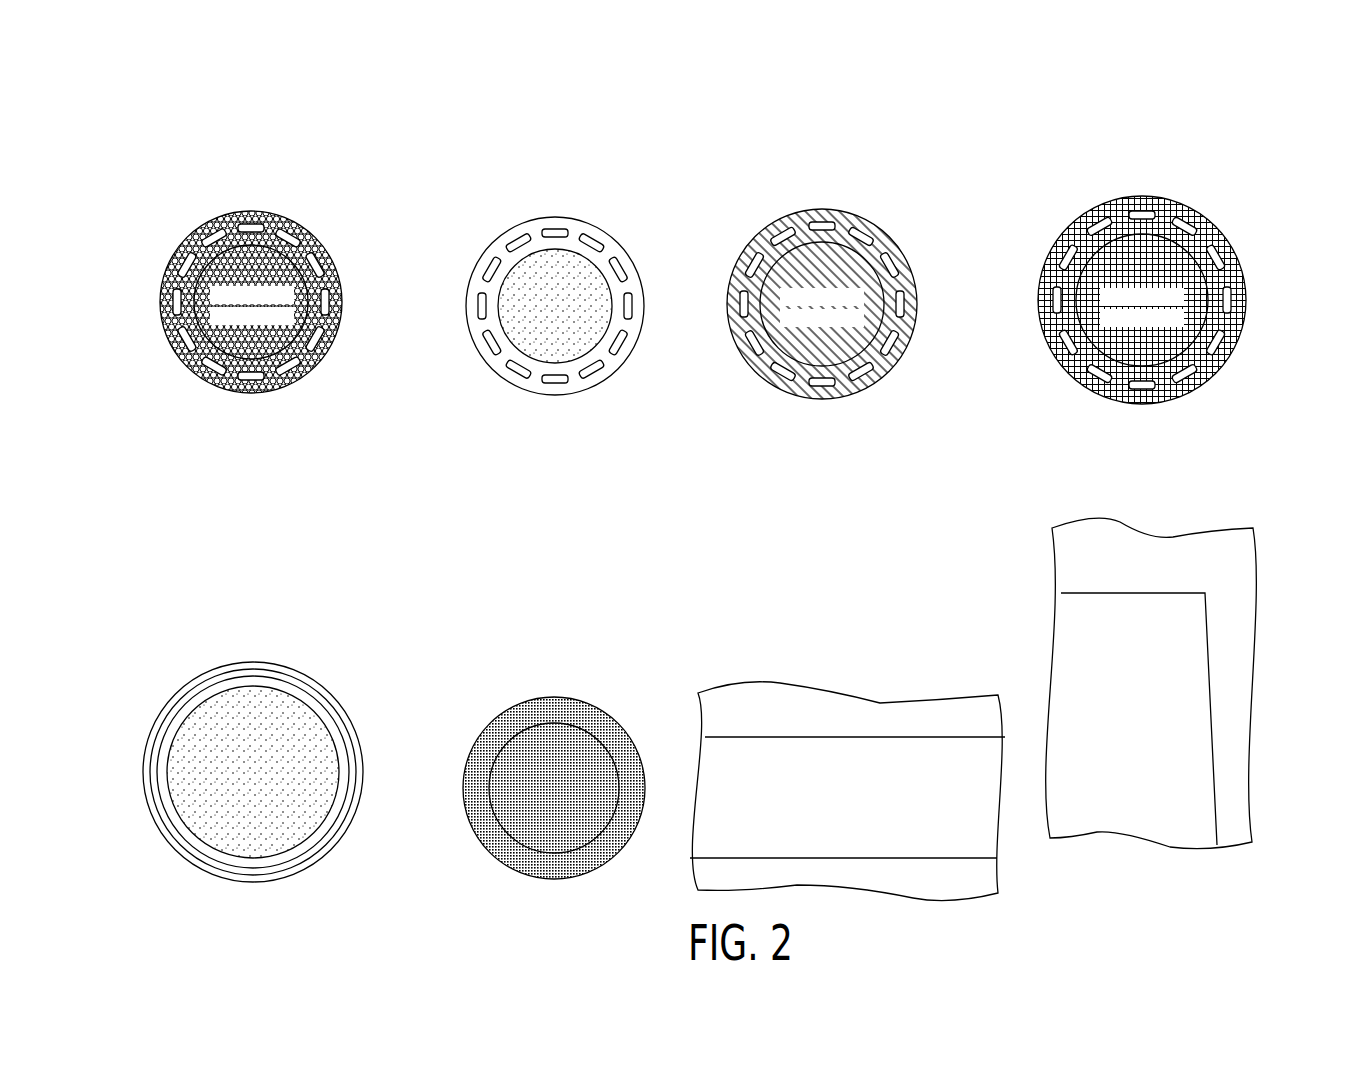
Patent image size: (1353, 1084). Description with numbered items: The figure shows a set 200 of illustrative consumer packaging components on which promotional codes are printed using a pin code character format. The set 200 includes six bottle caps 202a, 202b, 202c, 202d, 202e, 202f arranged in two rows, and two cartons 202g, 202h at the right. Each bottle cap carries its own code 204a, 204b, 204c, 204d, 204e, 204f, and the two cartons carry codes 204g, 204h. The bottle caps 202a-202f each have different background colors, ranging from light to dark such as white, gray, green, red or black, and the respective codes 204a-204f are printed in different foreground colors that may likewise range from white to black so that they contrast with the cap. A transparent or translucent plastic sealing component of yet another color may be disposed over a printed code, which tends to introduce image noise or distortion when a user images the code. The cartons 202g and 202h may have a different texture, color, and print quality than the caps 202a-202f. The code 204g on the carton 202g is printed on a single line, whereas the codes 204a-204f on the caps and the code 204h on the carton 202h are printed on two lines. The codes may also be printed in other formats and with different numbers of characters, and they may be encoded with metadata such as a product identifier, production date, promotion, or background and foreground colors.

The set of illustrative consumer packaging components 200 is at (695, 127).
The bottle cap 202a is at (255, 207).
The bottle cap 202b is at (557, 208).
The bottle cap 202c is at (820, 202).
The bottle cap 202d is at (1148, 192).
The bottle cap 202e is at (253, 645).
The bottle cap 202f is at (555, 668).
The carton 202g is at (718, 665).
The carton 202h is at (1142, 512).
The code 204a is at (282, 287).
The code 204b is at (582, 290).
The code 204c is at (855, 287).
The code 204d is at (1185, 277).
The code 204e is at (307, 742).
The code 204f is at (582, 757).
The code 204g is at (890, 763).
The code 204h is at (1173, 648).